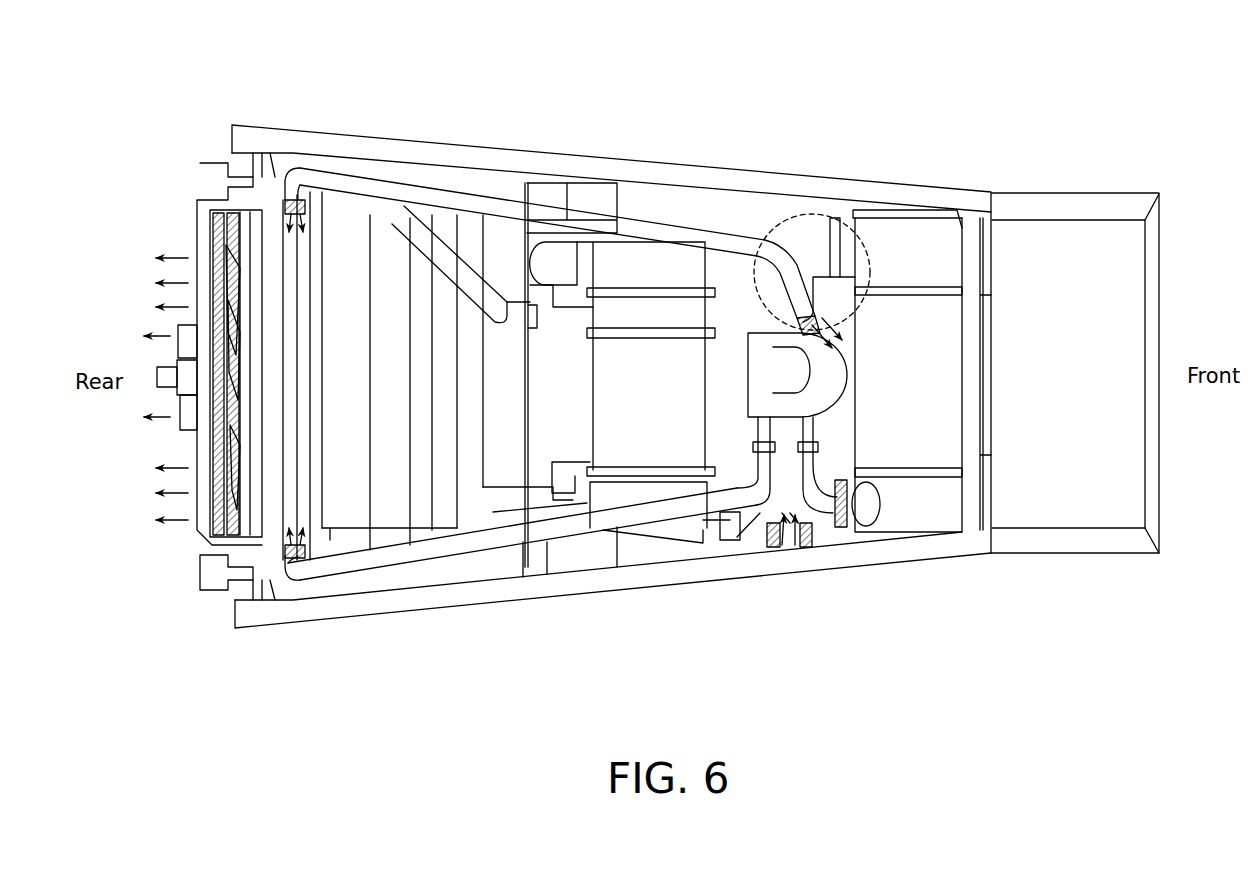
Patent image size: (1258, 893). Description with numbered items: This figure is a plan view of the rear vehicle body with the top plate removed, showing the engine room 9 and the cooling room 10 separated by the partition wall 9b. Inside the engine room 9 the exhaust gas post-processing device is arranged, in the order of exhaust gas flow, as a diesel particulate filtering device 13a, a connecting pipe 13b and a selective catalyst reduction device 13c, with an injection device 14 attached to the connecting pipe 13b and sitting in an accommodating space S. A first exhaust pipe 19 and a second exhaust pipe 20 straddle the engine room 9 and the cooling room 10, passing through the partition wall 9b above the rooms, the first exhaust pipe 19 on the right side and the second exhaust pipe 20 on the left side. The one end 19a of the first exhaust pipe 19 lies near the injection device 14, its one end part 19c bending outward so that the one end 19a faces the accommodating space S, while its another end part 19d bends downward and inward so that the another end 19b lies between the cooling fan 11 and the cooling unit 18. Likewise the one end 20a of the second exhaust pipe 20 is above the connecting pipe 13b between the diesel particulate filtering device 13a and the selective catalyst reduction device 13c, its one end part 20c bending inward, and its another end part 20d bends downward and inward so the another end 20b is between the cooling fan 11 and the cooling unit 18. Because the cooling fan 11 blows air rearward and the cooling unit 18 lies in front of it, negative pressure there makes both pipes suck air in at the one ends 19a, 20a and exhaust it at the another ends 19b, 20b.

The engine room 9 is at (736, 287).
The partition wall 9b is at (500, 228).
The cooling room 10 is at (384, 253).
The cooling fan 11 is at (221, 463).
The diesel particulate filtering device 13a is at (672, 258).
The connecting pipe 13b is at (793, 242).
The selective catalyst reduction device 13c is at (932, 258).
The injection device 14 is at (807, 537).
The cooling unit 18 is at (344, 545).
The first exhaust pipe 19 is at (573, 540).
The one end of first exhaust pipe 19a is at (790, 535).
The another end of first exhaust pipe 19b is at (283, 558).
The one end part of first exhaust pipe 19c is at (760, 515).
The another end part of first exhaust pipe 19d is at (298, 588).
The second exhaust pipe 20 is at (593, 214).
The one end of second exhaust pipe 20a is at (875, 268).
The another end of second exhaust pipe 20b is at (283, 208).
The one end part of second exhaust pipe 20c is at (812, 290).
The another end part of second exhaust pipe 20d is at (322, 175).
The accommodating space S is at (798, 540).